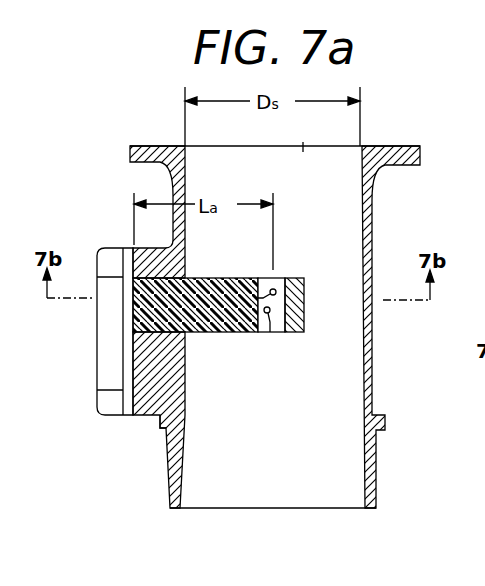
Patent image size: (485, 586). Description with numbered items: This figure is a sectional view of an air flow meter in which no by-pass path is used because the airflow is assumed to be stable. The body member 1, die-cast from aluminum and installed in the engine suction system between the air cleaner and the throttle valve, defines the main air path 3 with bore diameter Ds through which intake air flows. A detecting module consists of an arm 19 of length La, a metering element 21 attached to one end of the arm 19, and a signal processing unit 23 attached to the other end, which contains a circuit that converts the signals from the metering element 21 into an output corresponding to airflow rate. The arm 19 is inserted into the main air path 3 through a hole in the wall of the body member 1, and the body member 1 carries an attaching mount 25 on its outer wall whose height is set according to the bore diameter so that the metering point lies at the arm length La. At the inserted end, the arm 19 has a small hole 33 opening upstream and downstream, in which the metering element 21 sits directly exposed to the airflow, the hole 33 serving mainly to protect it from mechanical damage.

The body member 1 is at (408, 147).
The main air path 3 is at (308, 134).
The arm 19 is at (227, 333).
The metering element 21 is at (270, 333).
The signal processing unit 23 is at (97, 367).
The attaching mount 25 is at (147, 420).
The small hole 33 is at (279, 277).